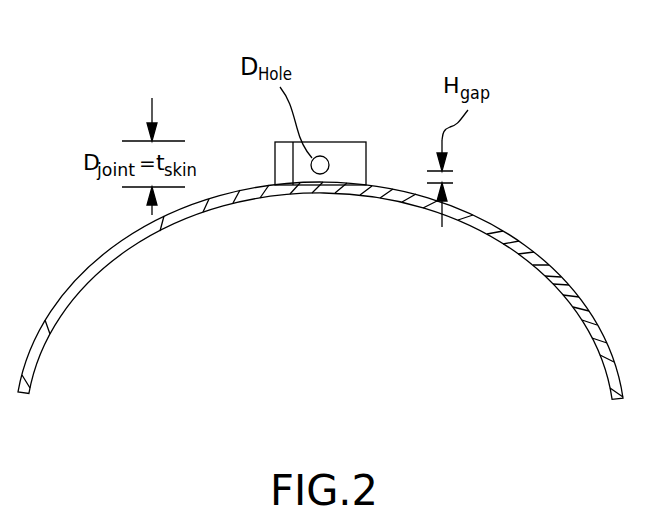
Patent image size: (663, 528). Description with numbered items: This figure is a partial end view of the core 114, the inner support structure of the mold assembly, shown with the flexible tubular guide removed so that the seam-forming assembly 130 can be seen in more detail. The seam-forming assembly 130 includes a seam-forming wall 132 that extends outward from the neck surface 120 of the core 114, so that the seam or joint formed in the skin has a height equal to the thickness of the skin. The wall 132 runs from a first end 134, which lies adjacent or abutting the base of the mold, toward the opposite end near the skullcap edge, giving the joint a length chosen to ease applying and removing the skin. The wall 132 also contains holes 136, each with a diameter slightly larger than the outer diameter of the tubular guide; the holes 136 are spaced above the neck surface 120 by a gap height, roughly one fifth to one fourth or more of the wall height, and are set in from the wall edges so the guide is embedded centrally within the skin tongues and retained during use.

The core 114 is at (320, 274).
The neck surface 120 is at (467, 210).
The seam-forming assembly 130 is at (327, 108).
The seam-forming wall 132 is at (357, 142).
The first end 134 is at (275, 158).
The holes 136 is at (329, 167).